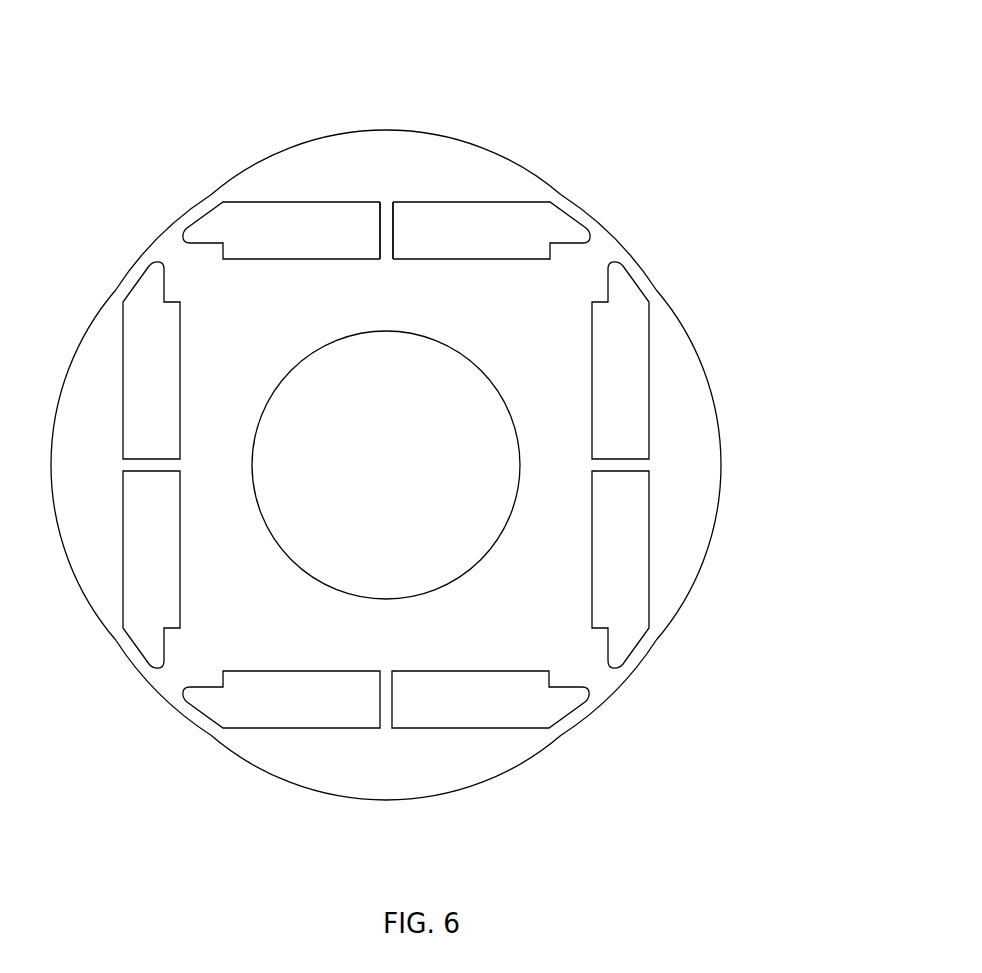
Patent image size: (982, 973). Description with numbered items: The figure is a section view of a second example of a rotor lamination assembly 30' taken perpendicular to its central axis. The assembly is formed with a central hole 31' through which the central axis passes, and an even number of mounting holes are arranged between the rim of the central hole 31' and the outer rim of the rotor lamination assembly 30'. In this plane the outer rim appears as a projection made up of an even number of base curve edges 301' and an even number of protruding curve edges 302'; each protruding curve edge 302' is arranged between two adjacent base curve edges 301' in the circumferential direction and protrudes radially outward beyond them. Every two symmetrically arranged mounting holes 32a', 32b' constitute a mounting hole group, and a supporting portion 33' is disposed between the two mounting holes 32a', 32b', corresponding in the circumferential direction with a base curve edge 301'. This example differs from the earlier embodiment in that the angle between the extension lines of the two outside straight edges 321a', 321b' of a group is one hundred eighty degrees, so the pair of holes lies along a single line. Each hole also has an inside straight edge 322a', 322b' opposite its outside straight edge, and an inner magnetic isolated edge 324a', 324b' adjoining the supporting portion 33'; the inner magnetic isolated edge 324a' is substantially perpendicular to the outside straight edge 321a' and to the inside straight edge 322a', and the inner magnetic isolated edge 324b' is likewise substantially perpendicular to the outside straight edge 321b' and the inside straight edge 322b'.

The rotor lamination assembly 30' is at (437, 401).
The base curve edge 301' is at (386, 427).
The protruding curve edge 302' is at (405, 446).
The central hole 31' is at (405, 465).
The mounting hole 32a' is at (281, 148).
The mounting hole 32b' is at (491, 147).
The outside straight edge 321a' is at (281, 209).
The outside straight edge 321b' is at (491, 209).
The inside straight edge 322a' is at (285, 268).
The inside straight edge 322b' is at (488, 267).
The inner magnetic isolated edge 324a' is at (339, 230).
The inner magnetic isolated edge 324b' is at (427, 230).
The supporting portion 33' is at (399, 258).